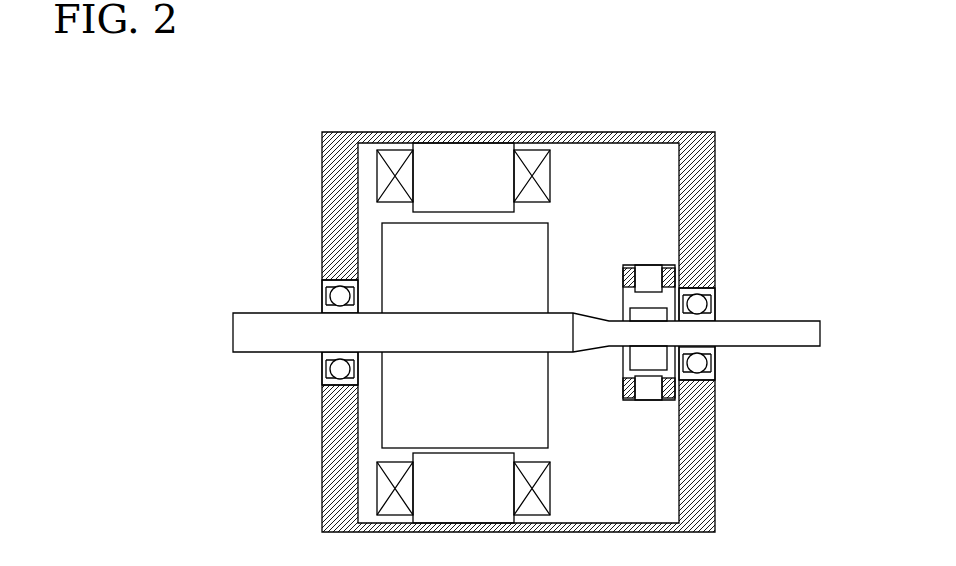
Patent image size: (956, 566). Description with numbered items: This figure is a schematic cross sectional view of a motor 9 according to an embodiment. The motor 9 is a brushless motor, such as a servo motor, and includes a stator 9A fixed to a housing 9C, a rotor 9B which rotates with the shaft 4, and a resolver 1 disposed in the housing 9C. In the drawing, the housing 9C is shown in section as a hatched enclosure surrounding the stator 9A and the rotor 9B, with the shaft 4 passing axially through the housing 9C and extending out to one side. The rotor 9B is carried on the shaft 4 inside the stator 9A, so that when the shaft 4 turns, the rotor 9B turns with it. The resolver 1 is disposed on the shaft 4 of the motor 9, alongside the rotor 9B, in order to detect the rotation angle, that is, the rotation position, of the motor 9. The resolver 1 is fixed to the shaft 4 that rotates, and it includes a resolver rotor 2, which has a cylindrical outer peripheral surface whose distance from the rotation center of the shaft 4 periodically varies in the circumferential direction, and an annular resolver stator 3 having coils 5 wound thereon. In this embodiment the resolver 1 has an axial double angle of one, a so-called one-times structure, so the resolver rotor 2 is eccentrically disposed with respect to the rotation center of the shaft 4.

The resolver 1 is at (626, 351).
The resolver rotor 2 is at (623, 357).
The resolver stator 3 is at (655, 264).
The shaft 4 is at (788, 320).
The coils 5 is at (620, 276).
The motor 9 is at (526, 311).
The stator 9A is at (499, 153).
The rotor 9B is at (377, 412).
The housing 9C is at (712, 478).